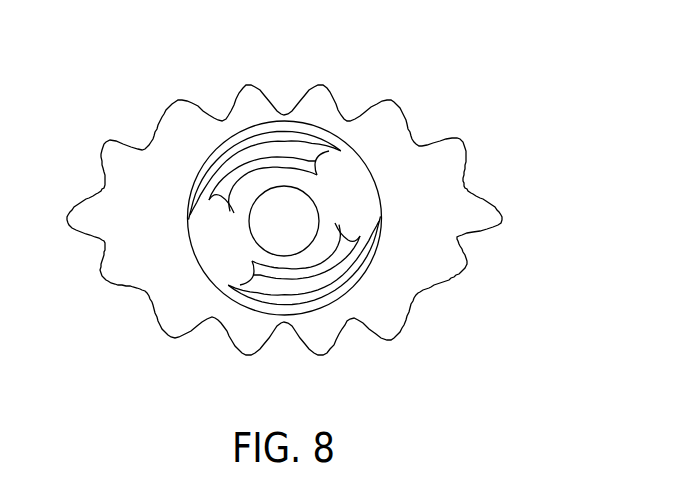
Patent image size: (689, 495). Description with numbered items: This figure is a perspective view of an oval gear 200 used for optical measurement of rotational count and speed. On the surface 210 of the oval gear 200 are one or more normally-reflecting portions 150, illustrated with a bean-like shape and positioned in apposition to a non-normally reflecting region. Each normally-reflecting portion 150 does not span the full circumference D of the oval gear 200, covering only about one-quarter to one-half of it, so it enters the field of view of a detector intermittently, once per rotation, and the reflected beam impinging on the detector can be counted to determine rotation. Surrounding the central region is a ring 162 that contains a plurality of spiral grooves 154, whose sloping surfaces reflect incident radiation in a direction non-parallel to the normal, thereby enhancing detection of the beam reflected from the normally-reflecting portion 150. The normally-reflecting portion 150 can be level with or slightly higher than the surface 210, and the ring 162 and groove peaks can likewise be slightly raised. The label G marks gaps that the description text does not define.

The oval gear 200 is at (476, 84).
The ring 162 is at (215, 130).
The circumference D is at (253, 127).
The spiral grooves 154 is at (308, 142).
The normally-reflecting portion 150 is at (350, 193).
The surface 210 is at (464, 208).
The gap G is at (280, 280).